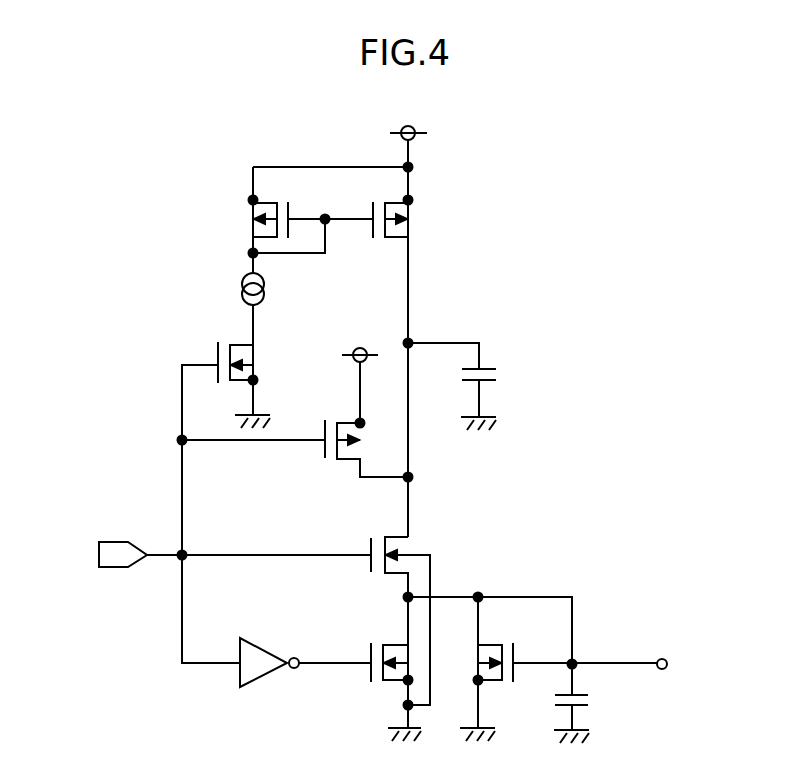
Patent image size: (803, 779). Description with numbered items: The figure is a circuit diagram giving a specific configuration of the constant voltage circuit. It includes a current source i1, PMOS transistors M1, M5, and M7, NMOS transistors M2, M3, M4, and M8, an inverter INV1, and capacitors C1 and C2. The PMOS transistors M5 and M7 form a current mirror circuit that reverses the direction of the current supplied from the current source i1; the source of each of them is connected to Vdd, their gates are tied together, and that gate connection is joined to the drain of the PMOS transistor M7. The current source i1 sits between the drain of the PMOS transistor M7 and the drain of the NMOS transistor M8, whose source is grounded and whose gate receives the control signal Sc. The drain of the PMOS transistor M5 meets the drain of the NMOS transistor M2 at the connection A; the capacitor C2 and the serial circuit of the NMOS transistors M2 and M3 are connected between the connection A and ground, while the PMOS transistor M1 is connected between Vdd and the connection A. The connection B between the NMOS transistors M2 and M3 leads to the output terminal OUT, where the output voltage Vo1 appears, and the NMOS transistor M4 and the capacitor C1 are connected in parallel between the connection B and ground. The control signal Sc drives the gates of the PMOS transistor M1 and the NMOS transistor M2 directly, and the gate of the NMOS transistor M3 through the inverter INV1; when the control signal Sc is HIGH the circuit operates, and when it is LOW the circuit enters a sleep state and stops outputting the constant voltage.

The PMOS transistor M7 is at (272, 209).
The PMOS transistor M5 is at (388, 209).
The current source i1 is at (265, 309).
The NMOS transistor M8 is at (242, 376).
The PMOS transistor M1 is at (367, 441).
The NMOS transistor M2 is at (398, 610).
The NMOS transistor M3 is at (394, 669).
The NMOS transistor M4 is at (558, 669).
The capacitor C1 is at (588, 702).
The capacitor C2 is at (495, 397).
The inverter INV1 is at (303, 651).
The connection A is at (459, 340).
The connection B is at (510, 597).
The output terminal OUT is at (668, 656).
The output voltage Vo1 is at (698, 666).
The control signal Sc is at (208, 554).
The supply voltage Vdd is at (384, 261).